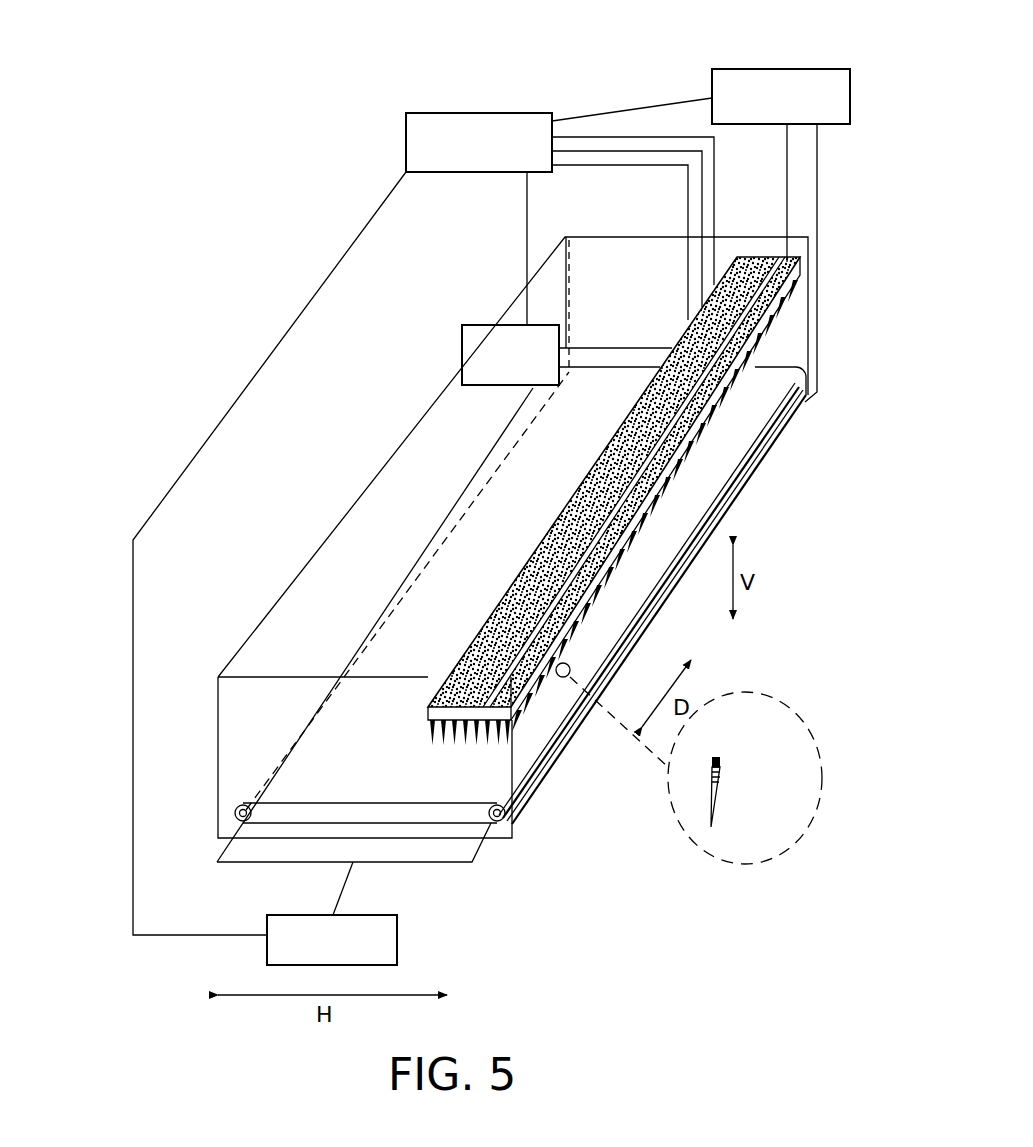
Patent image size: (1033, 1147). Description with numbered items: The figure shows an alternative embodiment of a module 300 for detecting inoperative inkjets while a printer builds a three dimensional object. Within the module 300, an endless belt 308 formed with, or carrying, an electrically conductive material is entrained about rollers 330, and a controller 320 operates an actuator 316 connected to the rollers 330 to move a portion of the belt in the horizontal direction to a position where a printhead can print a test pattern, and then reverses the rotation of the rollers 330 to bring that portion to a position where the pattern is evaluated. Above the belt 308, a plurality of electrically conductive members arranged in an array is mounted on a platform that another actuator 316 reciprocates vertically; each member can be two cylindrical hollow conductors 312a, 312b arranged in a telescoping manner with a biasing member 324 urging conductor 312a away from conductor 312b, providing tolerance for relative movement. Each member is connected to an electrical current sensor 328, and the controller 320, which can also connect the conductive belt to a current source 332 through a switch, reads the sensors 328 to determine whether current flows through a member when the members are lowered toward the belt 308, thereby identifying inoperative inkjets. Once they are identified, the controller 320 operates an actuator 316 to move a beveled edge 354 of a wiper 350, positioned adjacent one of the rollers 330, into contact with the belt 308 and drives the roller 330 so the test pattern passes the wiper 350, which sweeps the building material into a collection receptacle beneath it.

The module 300 is at (425, 414).
The endless belt 308 is at (342, 790).
The cylindrical hollow conductor 312a is at (713, 815).
The cylindrical hollow conductor 312b is at (718, 781).
The actuator 316 is at (812, 69).
The controller 320 is at (498, 113).
The biasing member 324 is at (720, 757).
The electrical current sensor 328 is at (768, 268).
The roller 330 is at (238, 804).
The current source 332 is at (474, 386).
The wiper 350 is at (533, 800).
The beveled edge 354 is at (567, 748).